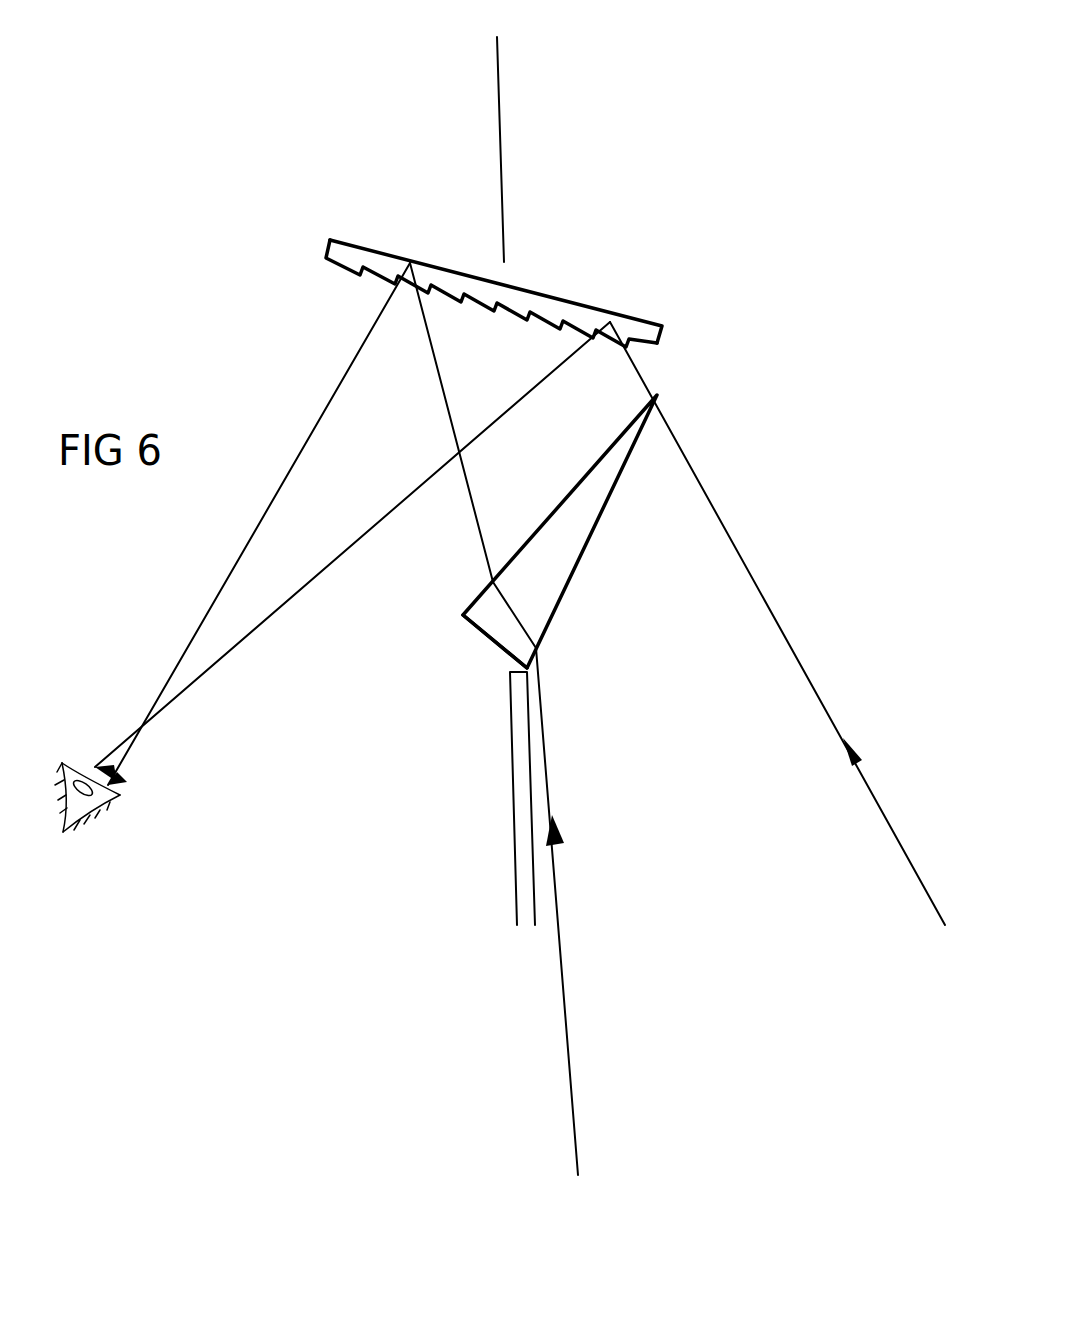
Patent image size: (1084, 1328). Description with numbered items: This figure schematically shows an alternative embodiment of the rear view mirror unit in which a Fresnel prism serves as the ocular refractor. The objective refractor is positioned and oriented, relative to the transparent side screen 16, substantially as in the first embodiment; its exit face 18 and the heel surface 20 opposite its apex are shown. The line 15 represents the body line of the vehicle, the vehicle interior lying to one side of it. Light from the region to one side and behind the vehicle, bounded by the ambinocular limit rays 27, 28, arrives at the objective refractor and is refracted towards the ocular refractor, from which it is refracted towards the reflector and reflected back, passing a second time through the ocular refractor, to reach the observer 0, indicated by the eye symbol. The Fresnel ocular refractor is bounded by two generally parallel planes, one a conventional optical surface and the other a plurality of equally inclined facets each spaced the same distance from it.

The body line 15 is at (500, 138).
The transparent side screen 16 is at (520, 813).
The exit face 18 is at (473, 602).
The heel surface 20 is at (487, 638).
The ambinocular limit ray 27 is at (550, 777).
The ambinocular limit ray 28 is at (808, 680).
The observer 0 is at (91, 812).